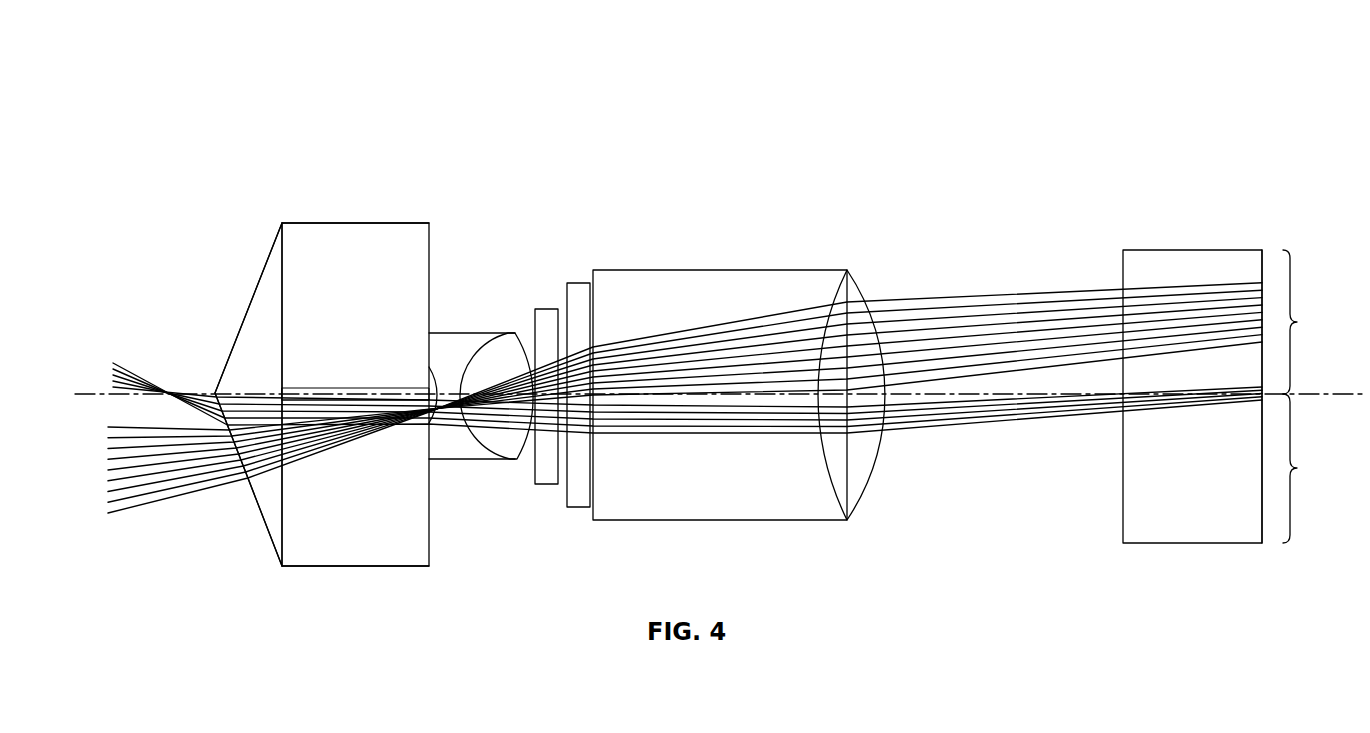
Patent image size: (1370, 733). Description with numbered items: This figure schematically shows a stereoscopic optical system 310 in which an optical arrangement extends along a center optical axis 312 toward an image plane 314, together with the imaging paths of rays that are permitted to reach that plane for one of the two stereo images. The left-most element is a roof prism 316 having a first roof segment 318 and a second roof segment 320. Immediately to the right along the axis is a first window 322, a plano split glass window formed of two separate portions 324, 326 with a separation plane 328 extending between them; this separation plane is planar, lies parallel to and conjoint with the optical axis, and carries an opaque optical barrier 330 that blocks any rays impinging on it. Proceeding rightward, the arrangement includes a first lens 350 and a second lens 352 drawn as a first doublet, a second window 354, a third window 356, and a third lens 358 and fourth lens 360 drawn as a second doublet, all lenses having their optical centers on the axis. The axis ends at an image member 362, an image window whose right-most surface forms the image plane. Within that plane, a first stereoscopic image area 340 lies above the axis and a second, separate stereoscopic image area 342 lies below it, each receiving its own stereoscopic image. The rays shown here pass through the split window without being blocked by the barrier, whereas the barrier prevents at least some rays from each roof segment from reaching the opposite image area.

The stereoscopic optical system 310 is at (386, 50).
The center optical axis 312 is at (92, 393).
The image plane 314 is at (1280, 246).
The roof prism 316 is at (272, 270).
The first roof segment 318 is at (263, 528).
The second roof segment 320 is at (233, 350).
The first window 322 is at (366, 216).
The first portion of the first window 324 is at (362, 553).
The second portion of the first window 326 is at (310, 233).
The separation plane 328 is at (370, 388).
The opaque optical barrier 330 is at (300, 388).
The first stereoscopic image area 340 is at (1318, 322).
The second stereoscopic image area 342 is at (1318, 468).
The first lens 350 is at (442, 332).
The second lens 352 is at (498, 345).
The second window 354 is at (538, 490).
The third window 356 is at (577, 503).
The third lens 358 is at (657, 285).
The fourth lens 360 is at (853, 290).
The image member 362 is at (1170, 267).